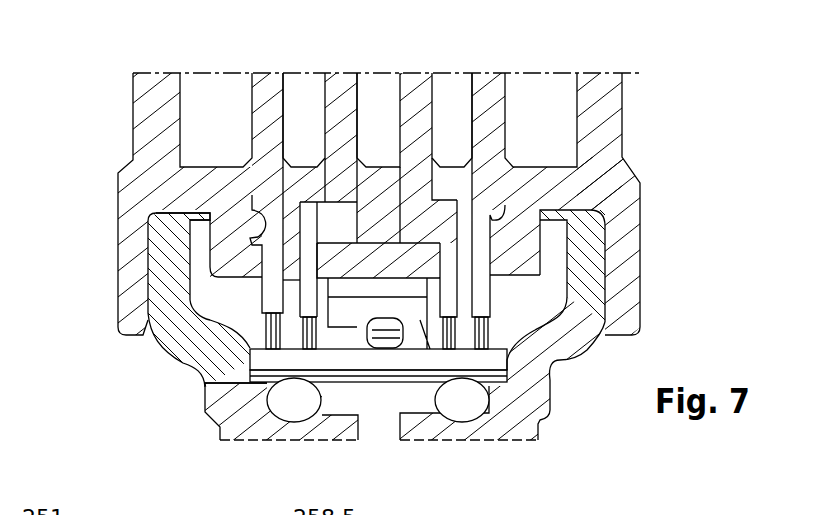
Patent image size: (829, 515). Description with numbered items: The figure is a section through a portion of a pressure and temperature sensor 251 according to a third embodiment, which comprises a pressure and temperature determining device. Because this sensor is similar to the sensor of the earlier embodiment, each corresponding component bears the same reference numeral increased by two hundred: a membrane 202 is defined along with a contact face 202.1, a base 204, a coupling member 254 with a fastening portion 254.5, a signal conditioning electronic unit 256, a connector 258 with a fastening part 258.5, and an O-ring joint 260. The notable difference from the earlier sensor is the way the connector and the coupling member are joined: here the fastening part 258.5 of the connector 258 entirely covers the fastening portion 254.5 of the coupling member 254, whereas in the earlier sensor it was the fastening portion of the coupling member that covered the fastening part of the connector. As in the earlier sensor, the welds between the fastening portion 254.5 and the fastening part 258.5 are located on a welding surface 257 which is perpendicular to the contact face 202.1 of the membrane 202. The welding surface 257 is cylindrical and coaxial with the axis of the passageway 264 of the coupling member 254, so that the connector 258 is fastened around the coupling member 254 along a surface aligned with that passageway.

The pressure and temperature sensor 251 is at (100, 85).
The connector 258 is at (222, 107).
The fastening portion 254.5 is at (167, 252).
The fastening part 258.5 is at (133, 262).
The welding surface 257 is at (136, 278).
The signal conditioning electronic unit 256 is at (387, 330).
The base 204 is at (258, 348).
The membrane 202 is at (252, 371).
The contact face 202.1 is at (378, 395).
The coupling member 254 is at (227, 385).
The O-ring joint 260 is at (287, 402).
The passageway 264 is at (369, 446).